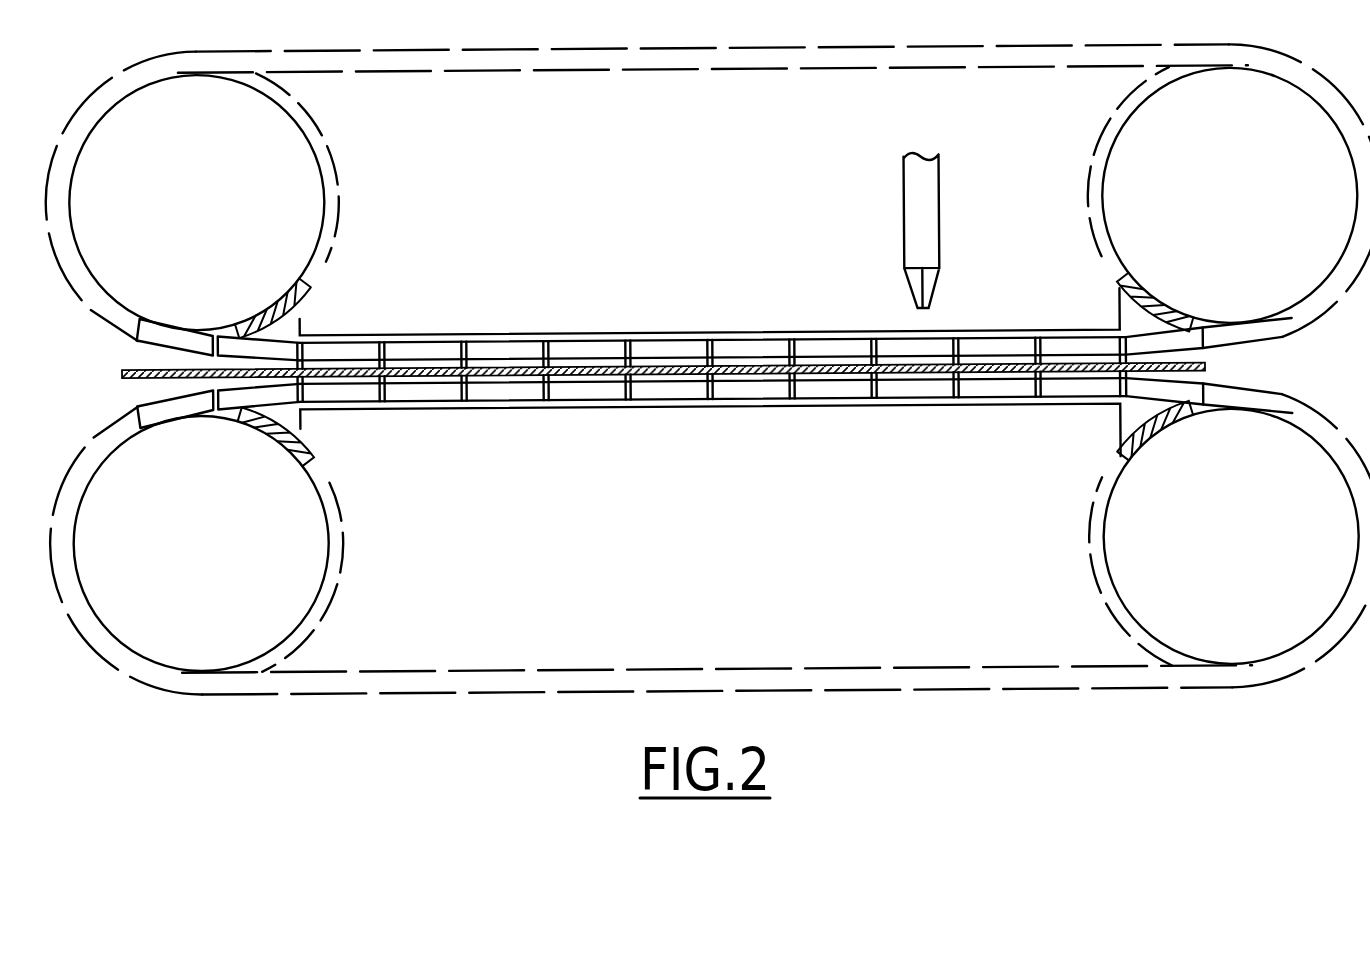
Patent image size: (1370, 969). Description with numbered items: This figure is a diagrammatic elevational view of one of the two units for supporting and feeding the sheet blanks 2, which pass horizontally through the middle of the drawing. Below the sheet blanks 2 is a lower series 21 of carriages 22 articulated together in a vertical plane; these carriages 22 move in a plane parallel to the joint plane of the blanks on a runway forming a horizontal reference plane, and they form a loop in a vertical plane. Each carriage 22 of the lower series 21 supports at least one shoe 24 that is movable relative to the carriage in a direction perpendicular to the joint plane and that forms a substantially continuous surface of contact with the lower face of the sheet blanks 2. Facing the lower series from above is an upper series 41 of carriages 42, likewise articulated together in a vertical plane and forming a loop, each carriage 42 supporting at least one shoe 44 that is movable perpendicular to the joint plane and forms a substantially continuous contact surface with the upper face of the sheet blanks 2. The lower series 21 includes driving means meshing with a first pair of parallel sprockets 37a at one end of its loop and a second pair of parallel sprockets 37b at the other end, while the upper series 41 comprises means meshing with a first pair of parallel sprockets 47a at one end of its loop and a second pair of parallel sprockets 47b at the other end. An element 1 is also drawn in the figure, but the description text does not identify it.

The nozzle 1 is at (932, 220).
The sheet blanks 2 is at (123, 371).
The lower series 21 is at (632, 412).
The carriages 22 is at (435, 398).
The shoe 24 is at (565, 384).
The upper series 41 is at (633, 318).
The carriages 42 is at (418, 346).
The shoe 44 is at (680, 367).
The first pair of parallel sprockets 37a is at (303, 580).
The second pair of parallel sprockets 37b is at (1135, 580).
The first pair of parallel sprockets 47a is at (297, 195).
The second pair of parallel sprockets 47b is at (1117, 166).